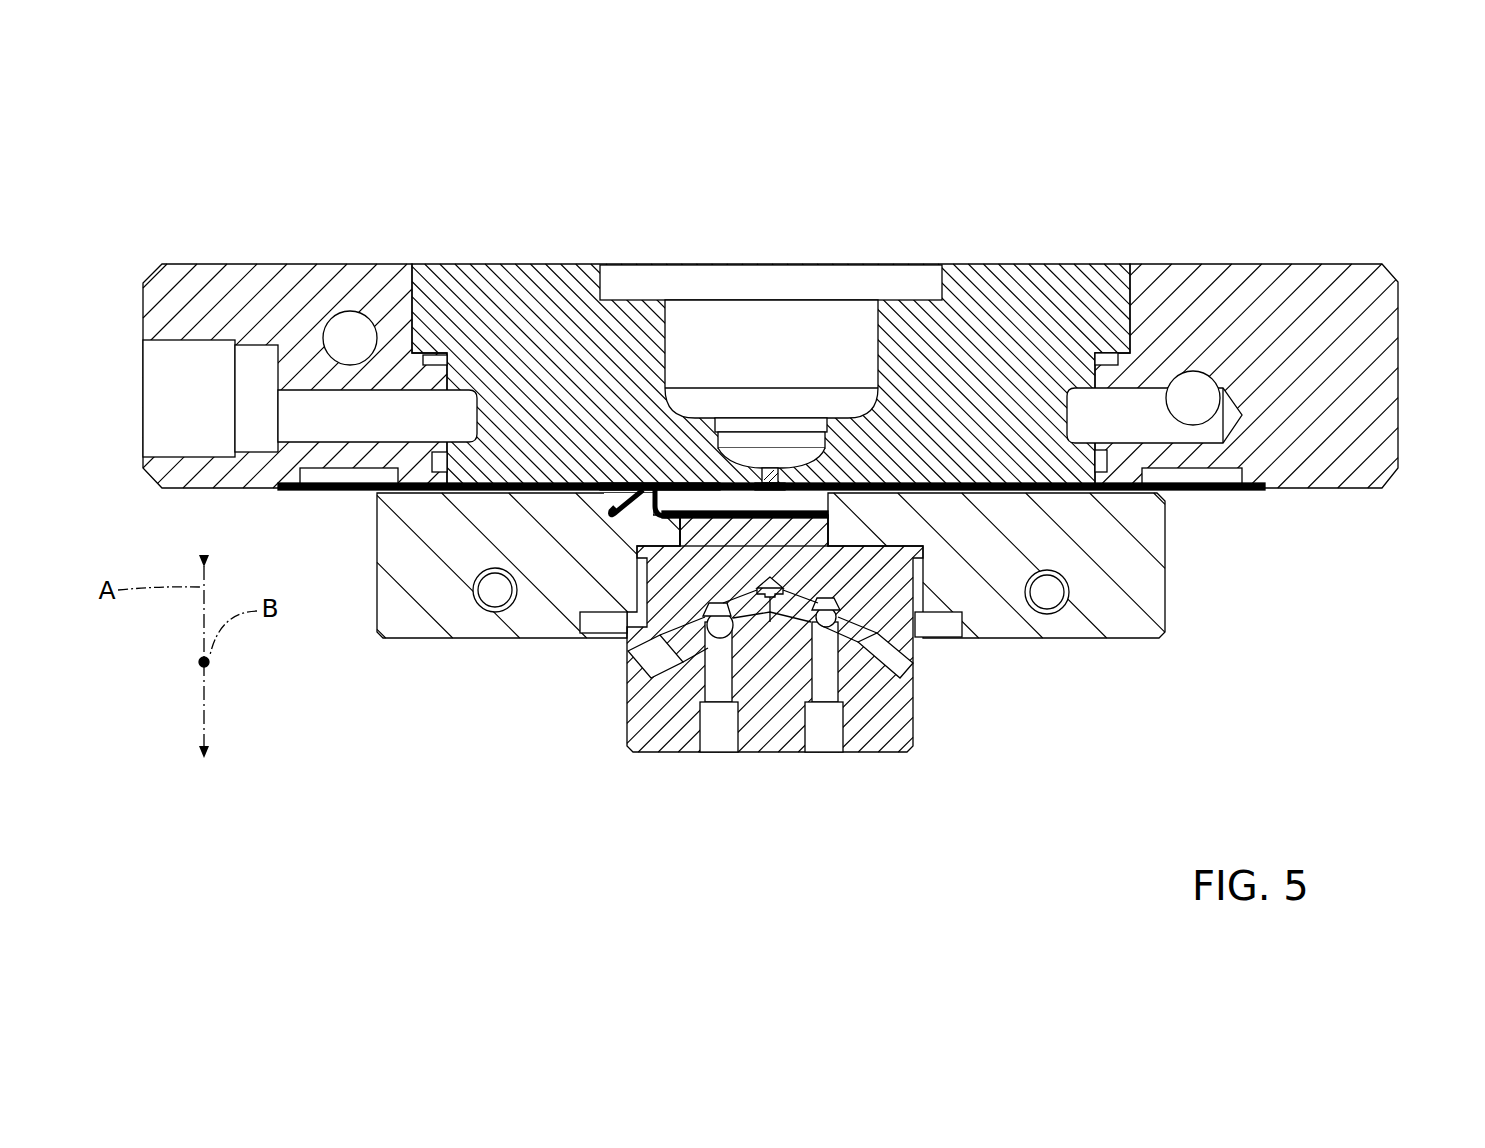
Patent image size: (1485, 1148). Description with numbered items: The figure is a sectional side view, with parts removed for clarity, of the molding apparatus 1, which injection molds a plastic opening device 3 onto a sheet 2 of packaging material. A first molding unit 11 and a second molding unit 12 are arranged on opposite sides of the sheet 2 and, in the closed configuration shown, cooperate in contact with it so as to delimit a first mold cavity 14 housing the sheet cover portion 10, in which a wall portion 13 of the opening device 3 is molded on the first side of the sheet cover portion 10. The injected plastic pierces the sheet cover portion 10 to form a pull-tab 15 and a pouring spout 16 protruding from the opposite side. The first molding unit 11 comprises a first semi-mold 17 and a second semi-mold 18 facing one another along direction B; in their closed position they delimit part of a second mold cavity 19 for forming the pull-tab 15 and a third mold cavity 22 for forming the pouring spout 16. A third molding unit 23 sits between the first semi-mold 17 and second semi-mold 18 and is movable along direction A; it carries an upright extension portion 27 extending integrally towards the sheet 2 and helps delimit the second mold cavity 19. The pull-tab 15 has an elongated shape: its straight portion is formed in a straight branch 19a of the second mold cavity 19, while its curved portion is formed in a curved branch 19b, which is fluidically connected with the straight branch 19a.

The molding apparatus 1 is at (808, 456).
The sheet 2 is at (775, 442).
The opening device 3 is at (771, 349).
The sheet cover portion 10 is at (699, 480).
The first molding unit 11 is at (825, 648).
The second molding unit 12 is at (808, 349).
The wall portion 13 is at (767, 466).
The first mold cavity 14 is at (775, 492).
The pull-tab 15 is at (767, 518).
The pouring spout 16 is at (632, 513).
The first semi-mold 17 is at (1113, 606).
The second semi-mold 18 is at (430, 600).
The second mold cavity 19 is at (627, 681).
The straight branch 19a is at (767, 524).
The curved branch 19b is at (709, 523).
The third mold cavity 22 is at (654, 514).
The third molding unit 23 is at (732, 663).
The upright extension portion 27 is at (802, 535).